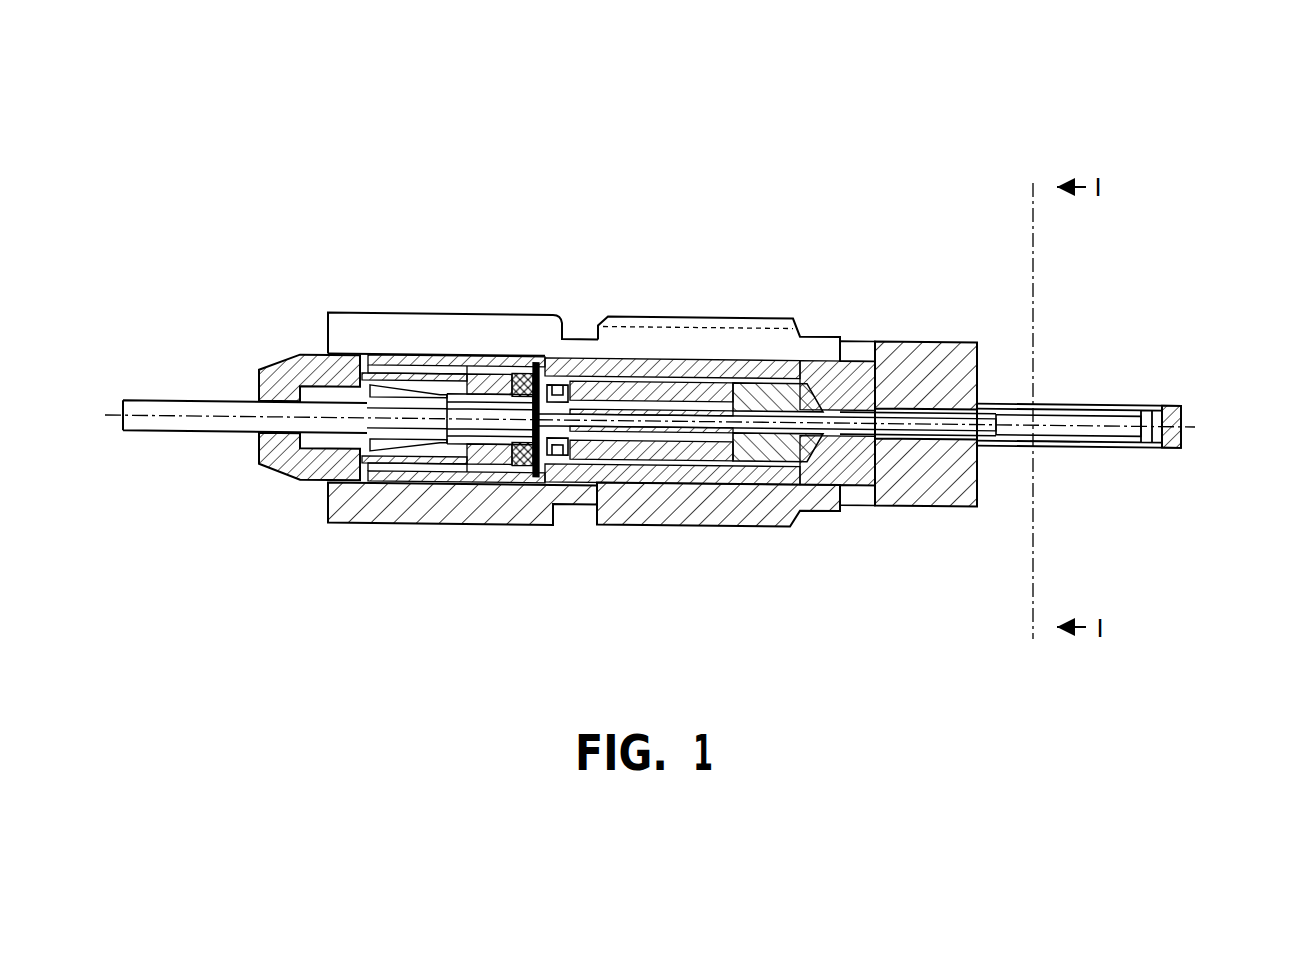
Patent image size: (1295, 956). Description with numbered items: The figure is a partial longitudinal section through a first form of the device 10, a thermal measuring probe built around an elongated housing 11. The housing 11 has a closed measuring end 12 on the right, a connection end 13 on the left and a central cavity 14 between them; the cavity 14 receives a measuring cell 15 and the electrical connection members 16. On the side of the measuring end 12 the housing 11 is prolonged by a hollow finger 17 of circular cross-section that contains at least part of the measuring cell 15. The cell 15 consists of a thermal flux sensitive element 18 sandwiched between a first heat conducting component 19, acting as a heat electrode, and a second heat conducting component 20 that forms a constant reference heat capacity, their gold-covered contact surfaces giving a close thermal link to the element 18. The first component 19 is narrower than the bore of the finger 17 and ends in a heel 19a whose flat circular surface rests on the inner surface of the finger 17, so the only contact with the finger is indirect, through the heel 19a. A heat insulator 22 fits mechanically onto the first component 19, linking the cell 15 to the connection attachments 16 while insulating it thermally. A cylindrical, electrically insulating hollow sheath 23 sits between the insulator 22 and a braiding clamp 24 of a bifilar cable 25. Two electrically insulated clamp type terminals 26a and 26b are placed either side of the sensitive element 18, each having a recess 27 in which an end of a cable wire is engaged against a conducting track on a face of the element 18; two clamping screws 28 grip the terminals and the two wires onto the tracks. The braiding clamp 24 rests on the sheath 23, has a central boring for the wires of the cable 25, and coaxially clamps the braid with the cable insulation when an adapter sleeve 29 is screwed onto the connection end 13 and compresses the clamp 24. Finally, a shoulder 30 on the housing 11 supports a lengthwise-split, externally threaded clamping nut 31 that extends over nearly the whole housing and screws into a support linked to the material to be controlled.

The device 10 is at (711, 188).
The housing 11 is at (473, 313).
The measuring end 12 is at (935, 343).
The connection end 13 is at (322, 537).
The central cavity 14 is at (725, 400).
The measuring cell 15 is at (1053, 445).
The electrical connection members 16 is at (378, 365).
The hollow finger 17 is at (1006, 402).
The thermal flux sensitive element 18 is at (997, 425).
The first heat conducting component 19 is at (1077, 413).
The heel 19a is at (1150, 435).
The second heat conducting component 20 is at (1112, 434).
The heat insulator 22 is at (785, 467).
The hollow sheath 23 is at (625, 398).
The braiding clamp 24 is at (500, 500).
The bifilar cable 25 is at (198, 434).
The first electrically insulated clamp type terminal 26a is at (595, 395).
The second electrically insulated clamp type terminal 26b is at (590, 480).
The recess 27 is at (533, 375).
The clamping screws 28 is at (565, 395).
The adapter sleeve 29 is at (262, 366).
The shoulder 30 is at (868, 350).
The clamping nut 31 is at (397, 332).